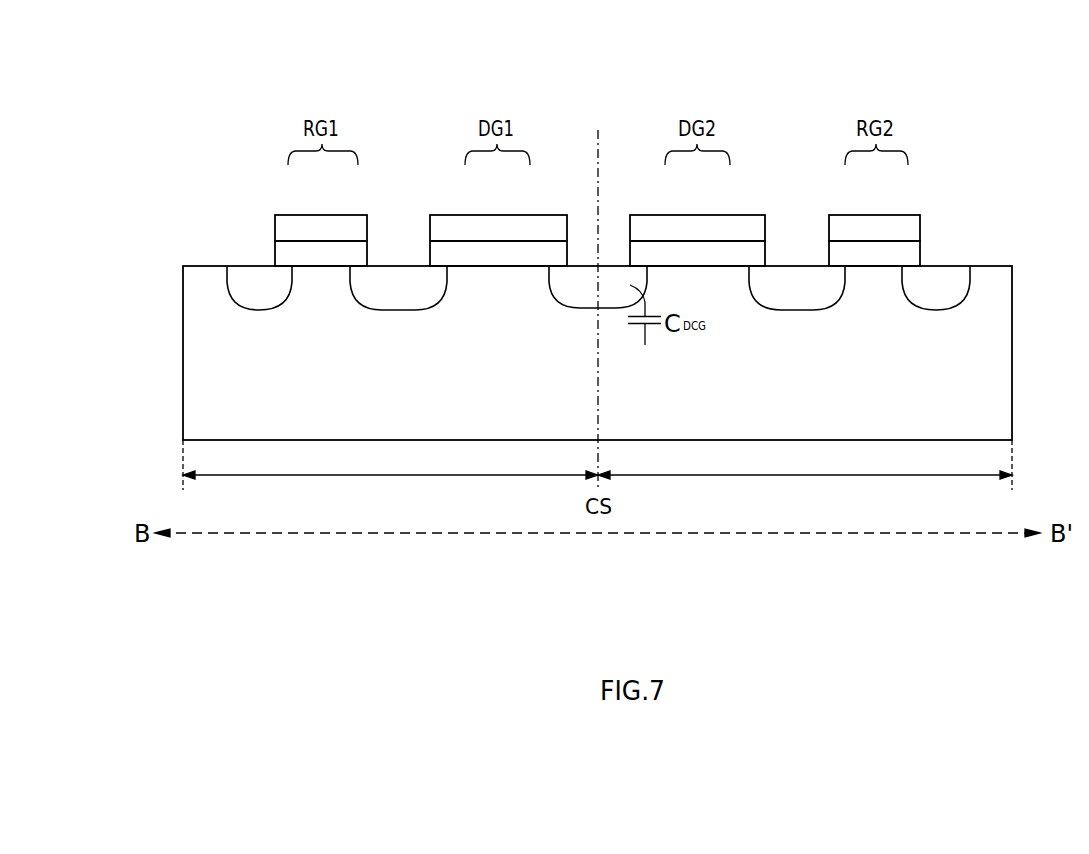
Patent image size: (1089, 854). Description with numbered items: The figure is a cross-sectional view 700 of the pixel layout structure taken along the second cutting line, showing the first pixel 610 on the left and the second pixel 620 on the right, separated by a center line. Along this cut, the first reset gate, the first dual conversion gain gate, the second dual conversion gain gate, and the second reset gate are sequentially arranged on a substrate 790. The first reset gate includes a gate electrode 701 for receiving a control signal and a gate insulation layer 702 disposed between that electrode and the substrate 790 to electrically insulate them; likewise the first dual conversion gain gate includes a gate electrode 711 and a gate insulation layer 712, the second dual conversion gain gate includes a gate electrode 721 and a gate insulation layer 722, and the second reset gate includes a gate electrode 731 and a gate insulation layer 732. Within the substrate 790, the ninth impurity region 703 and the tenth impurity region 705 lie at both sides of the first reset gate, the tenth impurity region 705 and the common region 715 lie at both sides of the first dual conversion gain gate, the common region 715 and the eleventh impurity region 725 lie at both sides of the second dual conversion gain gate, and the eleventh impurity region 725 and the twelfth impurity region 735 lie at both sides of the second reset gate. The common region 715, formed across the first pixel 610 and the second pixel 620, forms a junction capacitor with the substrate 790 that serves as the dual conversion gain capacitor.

The cross-sectional view 700 is at (982, 64).
The gate electrode 701 is at (292, 228).
The gate insulation layer 702 is at (338, 252).
The ninth impurity region 703 is at (258, 306).
The tenth impurity region 705 is at (395, 306).
The gate electrode 711 is at (466, 228).
The gate insulation layer 712 is at (519, 252).
The common region 715 is at (576, 293).
The gate electrode 721 is at (666, 228).
The gate insulation layer 722 is at (719, 252).
The eleventh impurity region 725 is at (794, 306).
The gate electrode 731 is at (846, 228).
The gate insulation layer 732 is at (894, 252).
The twelfth impurity region 735 is at (937, 306).
The substrate 790 is at (557, 420).
The first pixel 610 is at (390, 489).
The second pixel 620 is at (805, 489).